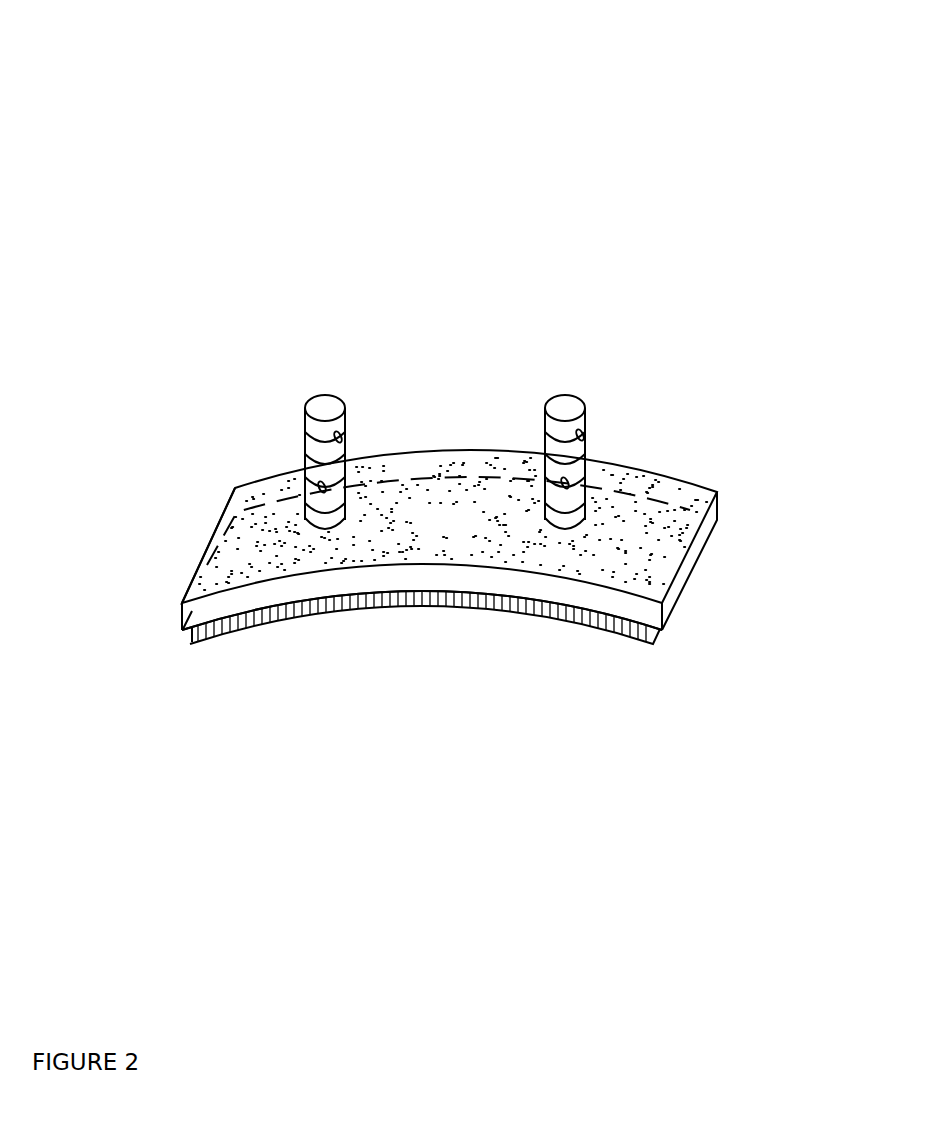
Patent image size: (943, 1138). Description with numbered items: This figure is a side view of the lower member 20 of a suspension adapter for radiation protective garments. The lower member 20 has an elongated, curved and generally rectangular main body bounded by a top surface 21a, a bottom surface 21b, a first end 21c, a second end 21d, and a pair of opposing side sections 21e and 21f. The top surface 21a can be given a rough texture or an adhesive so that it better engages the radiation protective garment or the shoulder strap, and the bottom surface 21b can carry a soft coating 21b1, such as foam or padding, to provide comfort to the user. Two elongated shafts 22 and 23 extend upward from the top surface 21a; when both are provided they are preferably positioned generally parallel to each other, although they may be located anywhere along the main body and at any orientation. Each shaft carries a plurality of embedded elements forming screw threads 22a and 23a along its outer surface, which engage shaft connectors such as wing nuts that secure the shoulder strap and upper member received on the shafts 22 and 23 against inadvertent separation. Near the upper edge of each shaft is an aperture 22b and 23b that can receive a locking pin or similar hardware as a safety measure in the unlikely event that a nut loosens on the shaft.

The lower member 20 is at (137, 93).
The top surface 21a is at (463, 531).
The bottom surface 21b is at (415, 612).
The soft coating 21b1 is at (237, 625).
The first end 21c is at (183, 578).
The second end 21d is at (692, 555).
The side section 21e is at (598, 598).
The side section 21f is at (268, 497).
The elongated shaft 22 is at (305, 395).
The screw threads 22a is at (325, 485).
The aperture 22b is at (341, 435).
The elongated shaft 23 is at (546, 395).
The screw threads 23a is at (568, 481).
The aperture 23b is at (583, 433).